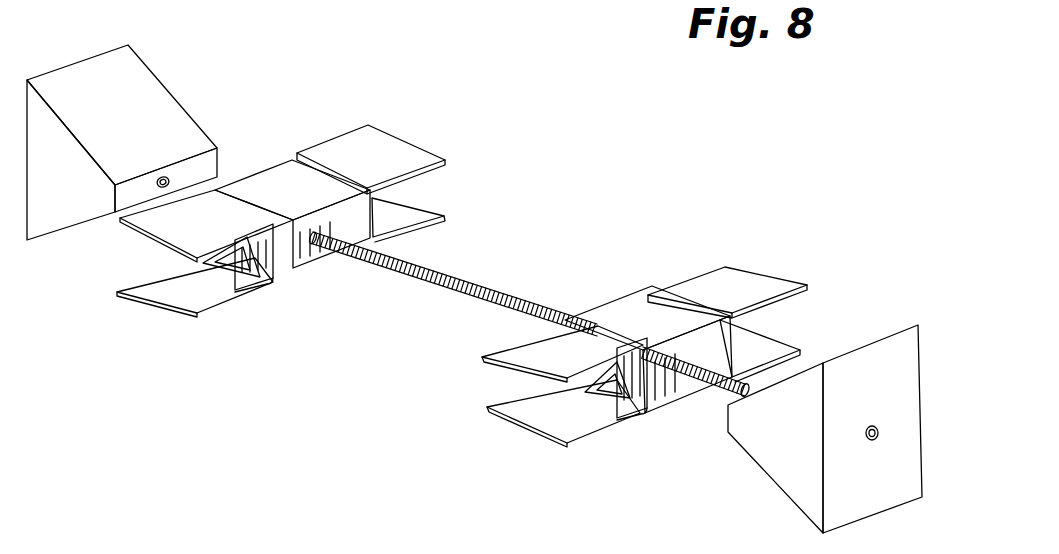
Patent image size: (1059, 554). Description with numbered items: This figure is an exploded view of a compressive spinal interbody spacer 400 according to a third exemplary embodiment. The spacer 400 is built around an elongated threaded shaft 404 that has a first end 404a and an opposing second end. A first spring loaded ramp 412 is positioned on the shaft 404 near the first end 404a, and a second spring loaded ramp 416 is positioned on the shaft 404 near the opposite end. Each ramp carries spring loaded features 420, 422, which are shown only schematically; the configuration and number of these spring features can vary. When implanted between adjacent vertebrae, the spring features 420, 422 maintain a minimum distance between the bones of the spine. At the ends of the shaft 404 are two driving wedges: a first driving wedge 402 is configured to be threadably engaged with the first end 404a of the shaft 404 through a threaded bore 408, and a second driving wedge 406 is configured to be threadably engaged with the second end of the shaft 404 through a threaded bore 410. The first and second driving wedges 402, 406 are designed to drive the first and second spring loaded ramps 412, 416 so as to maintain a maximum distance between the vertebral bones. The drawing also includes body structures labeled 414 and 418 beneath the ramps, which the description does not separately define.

The compressive spinal interbody spacer 400 is at (668, 200).
The first driving wedge 402 is at (822, 439).
The elongated threaded shaft 404 is at (529, 346).
The first end 404a is at (727, 393).
The second driving wedge 406 is at (130, 163).
The threaded bore 408 is at (875, 442).
The threaded bore 410 is at (168, 180).
The first spring loaded ramp 412 is at (762, 275).
The left carriage body 414 is at (281, 201).
The second spring loaded ramp 416 is at (400, 140).
The right carriage body 418 is at (644, 338).
The spring loaded feature 420 is at (237, 245).
The spring loaded feature 422 is at (253, 283).